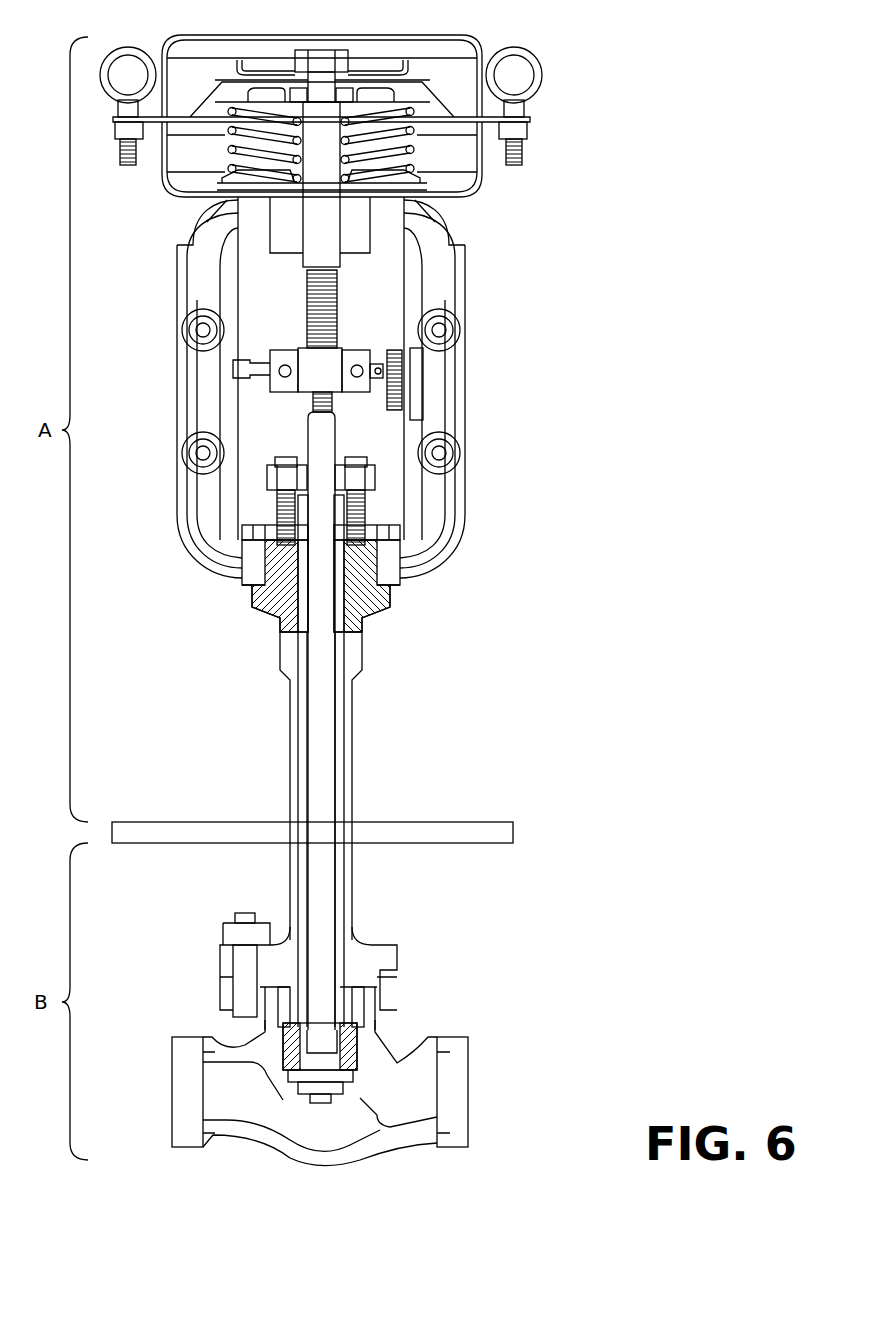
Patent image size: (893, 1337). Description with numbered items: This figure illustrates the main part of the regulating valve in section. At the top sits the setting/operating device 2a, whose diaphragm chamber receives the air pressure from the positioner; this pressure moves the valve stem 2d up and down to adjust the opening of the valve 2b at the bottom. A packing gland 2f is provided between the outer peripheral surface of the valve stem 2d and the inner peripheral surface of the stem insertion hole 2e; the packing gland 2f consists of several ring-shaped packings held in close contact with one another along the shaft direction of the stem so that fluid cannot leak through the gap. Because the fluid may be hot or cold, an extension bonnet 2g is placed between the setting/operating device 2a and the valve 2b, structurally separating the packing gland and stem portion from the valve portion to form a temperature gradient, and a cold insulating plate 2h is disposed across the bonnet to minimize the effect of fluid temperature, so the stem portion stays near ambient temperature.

The setting/operating device 2a is at (480, 180).
The valve 2b is at (360, 1078).
The valve stem 2d is at (337, 445).
The stem insertion hole 2e is at (282, 612).
The packing gland 2f is at (340, 587).
The extension bonnet 2g is at (352, 792).
The cold insulating plate (heat conserving plate) 2h is at (513, 830).